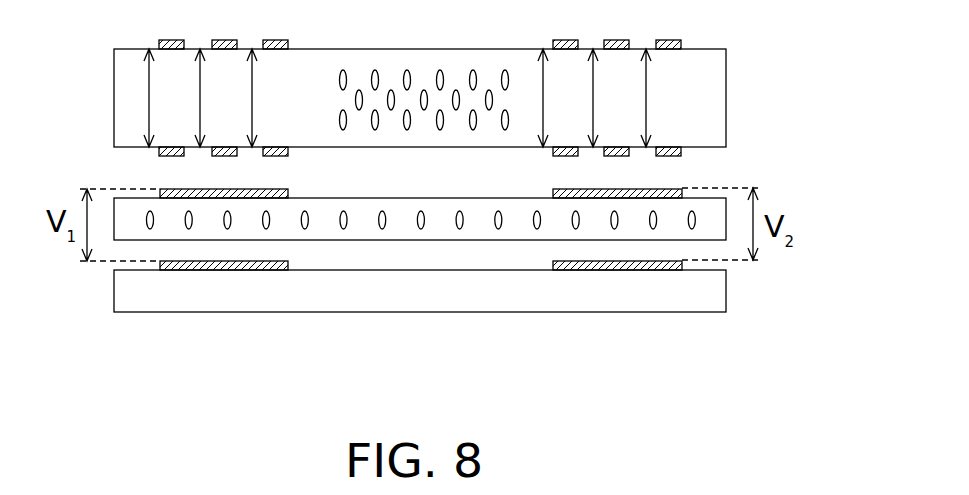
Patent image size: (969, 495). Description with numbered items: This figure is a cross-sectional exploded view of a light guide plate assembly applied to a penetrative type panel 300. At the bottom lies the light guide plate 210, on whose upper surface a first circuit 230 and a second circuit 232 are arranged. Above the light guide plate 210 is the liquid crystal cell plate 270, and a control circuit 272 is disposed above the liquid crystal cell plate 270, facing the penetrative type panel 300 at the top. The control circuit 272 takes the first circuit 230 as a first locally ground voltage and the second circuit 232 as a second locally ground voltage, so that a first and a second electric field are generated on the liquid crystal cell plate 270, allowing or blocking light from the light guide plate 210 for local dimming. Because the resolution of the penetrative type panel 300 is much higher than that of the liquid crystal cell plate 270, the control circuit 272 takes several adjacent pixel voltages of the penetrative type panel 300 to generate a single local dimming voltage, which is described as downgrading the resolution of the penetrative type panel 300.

The penetrative type panel 300 is at (712, 90).
The liquid crystal cell plate 270 is at (710, 207).
The control circuit 272 is at (177, 191).
The light guide plate 210 is at (712, 297).
The first circuit 230 is at (203, 270).
The second circuit 232 is at (607, 270).